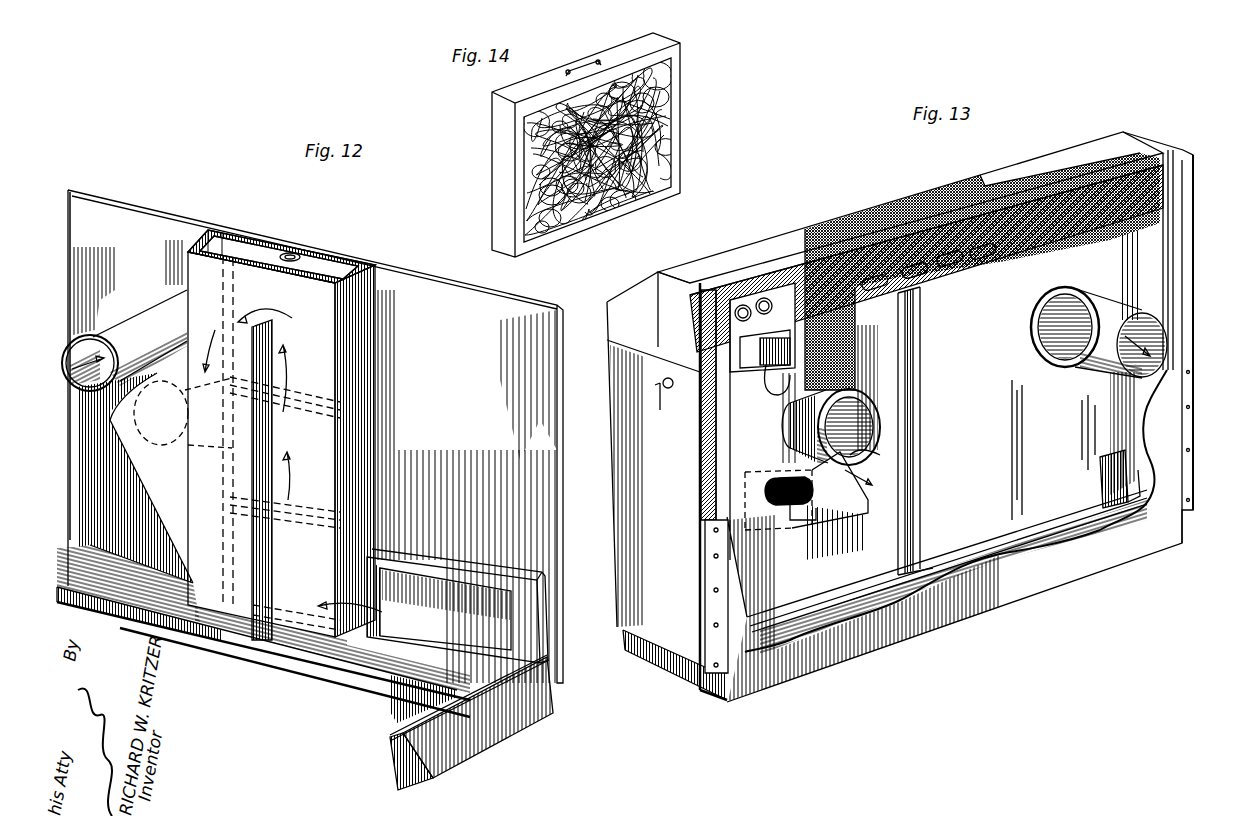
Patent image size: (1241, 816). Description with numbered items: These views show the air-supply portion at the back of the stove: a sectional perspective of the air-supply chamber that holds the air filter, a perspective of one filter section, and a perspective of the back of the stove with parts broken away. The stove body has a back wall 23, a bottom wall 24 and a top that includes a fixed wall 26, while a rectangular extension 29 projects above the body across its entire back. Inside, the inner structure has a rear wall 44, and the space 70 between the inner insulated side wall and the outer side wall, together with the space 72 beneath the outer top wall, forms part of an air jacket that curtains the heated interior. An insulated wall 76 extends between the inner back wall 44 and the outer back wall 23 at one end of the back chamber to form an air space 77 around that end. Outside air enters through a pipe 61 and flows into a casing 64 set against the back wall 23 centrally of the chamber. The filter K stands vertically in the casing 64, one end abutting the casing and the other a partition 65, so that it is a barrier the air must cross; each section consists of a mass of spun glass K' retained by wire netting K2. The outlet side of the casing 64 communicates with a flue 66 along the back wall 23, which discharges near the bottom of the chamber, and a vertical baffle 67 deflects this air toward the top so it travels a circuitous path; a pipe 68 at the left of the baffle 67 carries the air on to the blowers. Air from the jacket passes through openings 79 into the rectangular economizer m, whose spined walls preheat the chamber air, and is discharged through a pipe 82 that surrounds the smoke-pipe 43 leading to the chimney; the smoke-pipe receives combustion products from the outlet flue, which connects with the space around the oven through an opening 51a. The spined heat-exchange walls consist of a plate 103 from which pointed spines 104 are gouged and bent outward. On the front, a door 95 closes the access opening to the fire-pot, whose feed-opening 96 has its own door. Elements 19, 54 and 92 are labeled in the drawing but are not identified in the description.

In FIG. 14, the air-filter K is at (608, 145).
In FIG. 12, the air-filter K is at (285, 431).
In FIG. 14, the wire netting K2 is at (683, 79).
In FIG. 12, the wire netting K2 is at (284, 242).
In FIG. 14, the spun glass K' is at (618, 148).
In FIG. 13, the openings 19 is at (750, 300).
In FIG. 12, the back wall 23 is at (315, 436).
In FIG. 13, the back wall 23 is at (1098, 570).
In FIG. 12, the bottom wall 24 is at (473, 680).
In FIG. 13, the bottom wall 24 is at (1003, 553).
In FIG. 13, the fixed top wall 26 is at (633, 303).
In FIG. 13, the rectangular extension 29 is at (910, 242).
In FIG. 13, the smoke-pipe 43 is at (858, 455).
In FIG. 12, the rear wall 44 is at (333, 670).
In FIG. 13, the rear wall 44 is at (876, 560).
In FIG. 13, the opening 51a is at (770, 506).
In FIG. 12, the air duct 54 is at (135, 310).
In FIG. 13, the air duct 54 is at (1099, 332).
In FIG. 12, the pipe 61 is at (157, 448).
In FIG. 12, the casing 64 is at (142, 533).
In FIG. 12, the partition 65 is at (283, 252).
In FIG. 12, the flue 66 is at (478, 583).
In FIG. 12, the vertical baffle 67 is at (263, 431).
In FIG. 13, the vertical baffle 67 is at (918, 470).
In FIG. 13, the pipe 68 is at (1104, 457).
In FIG. 13, the air space 70 is at (712, 517).
In FIG. 13, the air chamber 72 is at (1050, 436).
In FIG. 13, the insulated wall 76 is at (1171, 197).
In FIG. 13, the air space 77 is at (1186, 166).
In FIG. 13, the openings 79 is at (957, 267).
In FIG. 13, the pipe 82 is at (882, 437).
In FIG. 13, the door jamb 92 is at (748, 433).
In FIG. 13, the door 95 is at (768, 372).
In FIG. 13, the feed-opening 96 is at (712, 485).
In FIG. 13, the plate 103 is at (1000, 256).
In FIG. 13, the spines 104 is at (1070, 245).
In FIG. 13, the economizer m is at (935, 268).